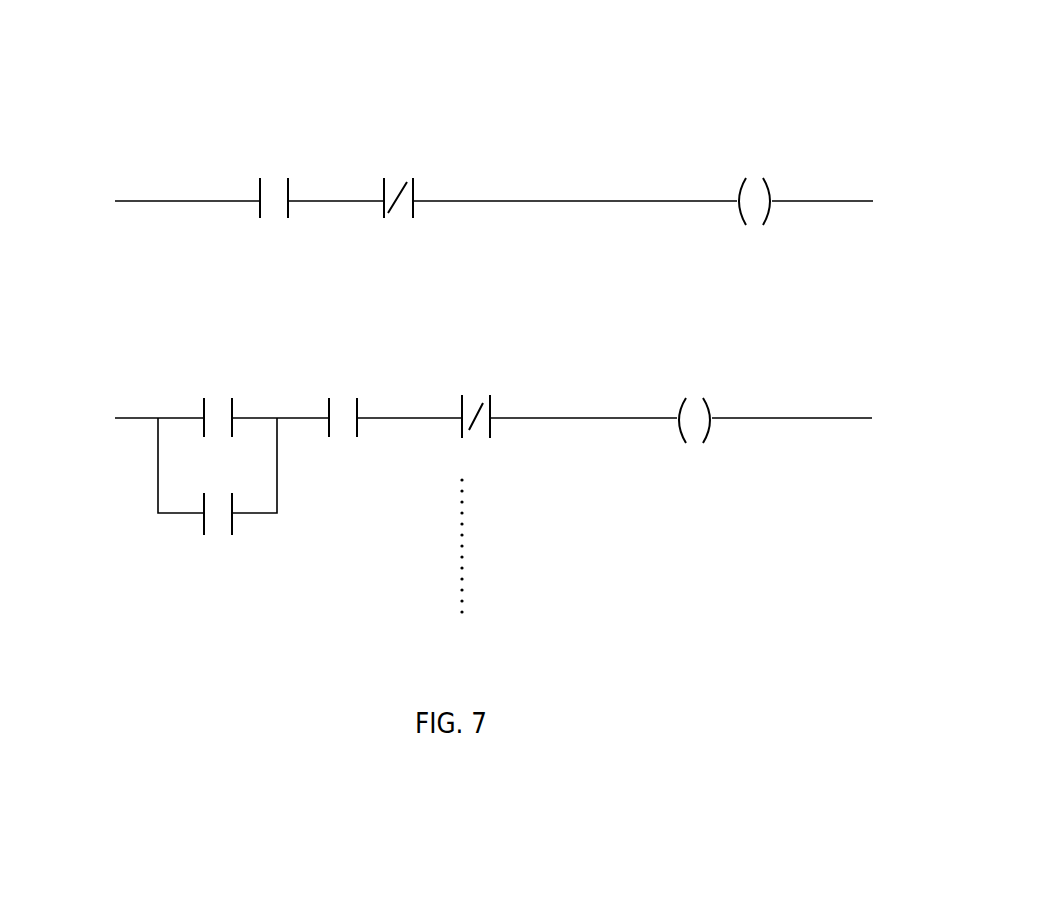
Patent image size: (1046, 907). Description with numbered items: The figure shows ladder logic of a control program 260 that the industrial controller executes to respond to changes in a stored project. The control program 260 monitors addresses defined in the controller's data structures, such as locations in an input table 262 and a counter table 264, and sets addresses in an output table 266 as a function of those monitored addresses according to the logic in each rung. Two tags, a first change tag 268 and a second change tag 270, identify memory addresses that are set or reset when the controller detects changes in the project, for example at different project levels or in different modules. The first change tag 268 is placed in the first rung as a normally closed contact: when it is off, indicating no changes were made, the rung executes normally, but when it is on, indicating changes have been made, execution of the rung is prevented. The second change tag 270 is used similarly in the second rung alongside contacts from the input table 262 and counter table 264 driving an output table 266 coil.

The control program 260 is at (115, 118).
The input table 262 is at (275, 127).
The counter table 264 is at (343, 443).
The output table 266 is at (773, 125).
The first change tag 268 is at (413, 127).
The second change tag 270 is at (483, 348).